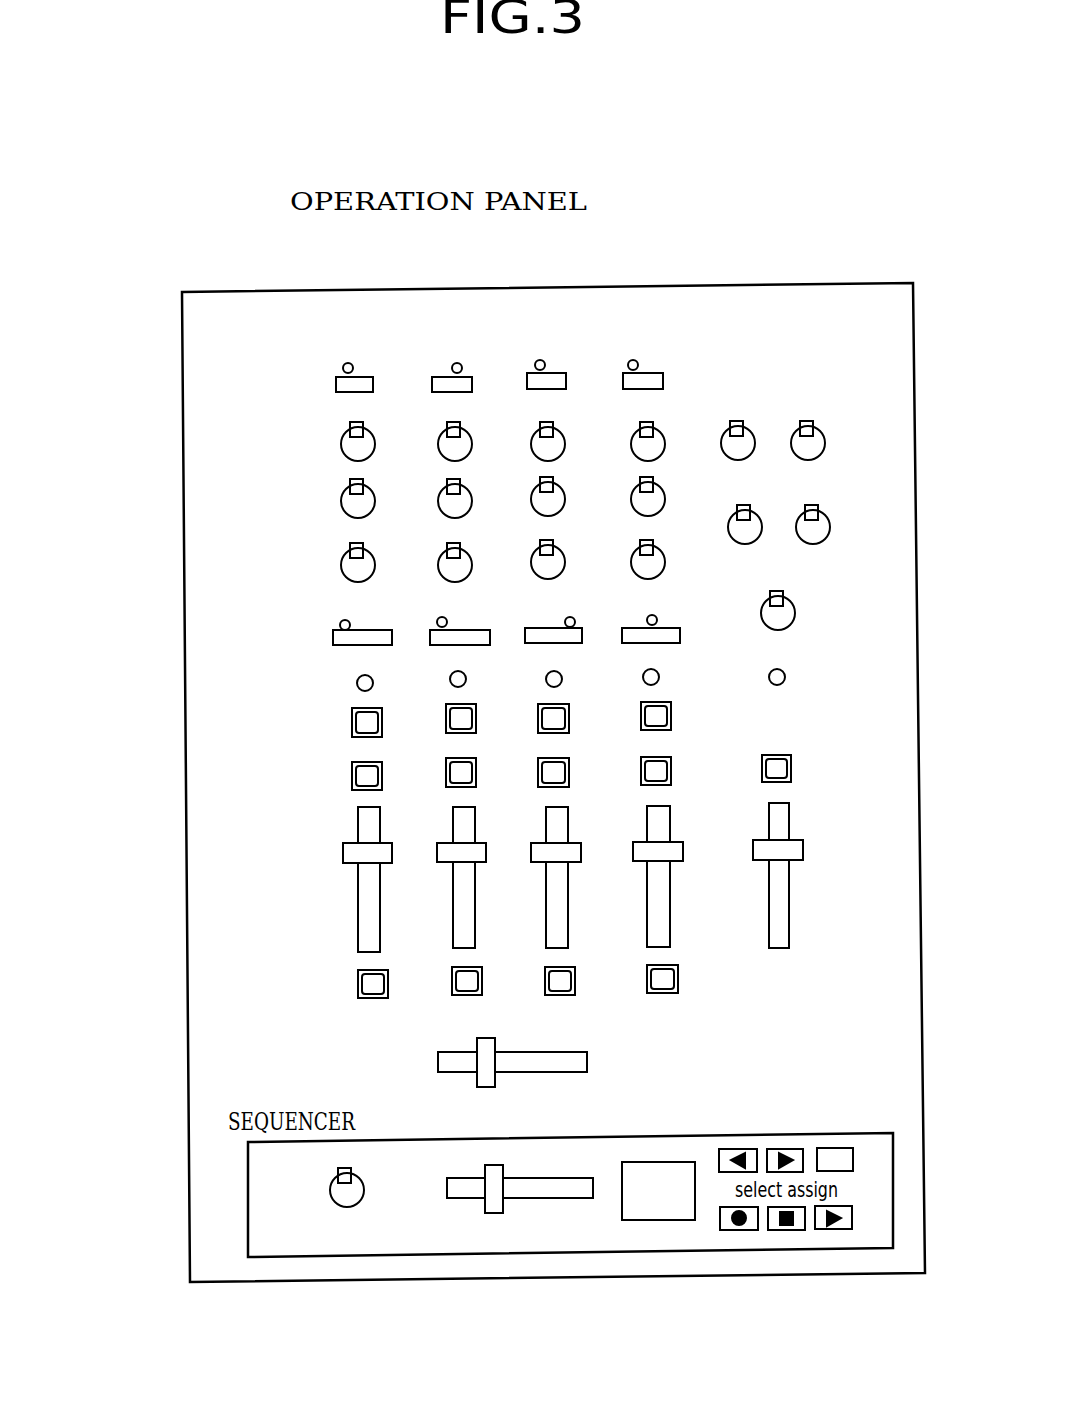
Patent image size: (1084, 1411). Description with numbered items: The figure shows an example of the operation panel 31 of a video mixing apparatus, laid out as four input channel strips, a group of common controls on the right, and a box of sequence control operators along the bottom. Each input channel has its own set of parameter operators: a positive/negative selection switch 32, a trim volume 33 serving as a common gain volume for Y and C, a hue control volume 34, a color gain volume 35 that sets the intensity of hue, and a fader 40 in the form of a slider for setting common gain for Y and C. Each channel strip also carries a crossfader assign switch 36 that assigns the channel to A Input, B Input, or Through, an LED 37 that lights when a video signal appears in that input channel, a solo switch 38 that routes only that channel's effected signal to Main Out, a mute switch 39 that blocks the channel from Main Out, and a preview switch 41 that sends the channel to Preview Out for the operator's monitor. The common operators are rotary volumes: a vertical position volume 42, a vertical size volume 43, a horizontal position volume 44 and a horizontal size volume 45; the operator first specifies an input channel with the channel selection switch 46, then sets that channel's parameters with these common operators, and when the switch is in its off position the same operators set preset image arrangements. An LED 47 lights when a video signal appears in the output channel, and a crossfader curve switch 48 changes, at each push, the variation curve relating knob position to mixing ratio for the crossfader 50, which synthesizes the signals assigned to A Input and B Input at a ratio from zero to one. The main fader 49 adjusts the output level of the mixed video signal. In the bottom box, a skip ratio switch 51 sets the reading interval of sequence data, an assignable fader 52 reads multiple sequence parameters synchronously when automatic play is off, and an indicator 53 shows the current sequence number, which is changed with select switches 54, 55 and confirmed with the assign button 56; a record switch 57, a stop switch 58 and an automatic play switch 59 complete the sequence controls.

The operation panel 31 is at (258, 290).
The positive/negative selection switch 32 is at (181, 388).
The trim volume 33 is at (245, 447).
The hue control volume 34 is at (250, 505).
The color gain volume 35 is at (243, 572).
The crossfader assign switch 36 is at (183, 642).
The LED 37 is at (235, 683).
The solo switch 38 is at (262, 725).
The mute switch 39 is at (250, 780).
The fader 40 is at (250, 850).
The preview switch 41 is at (215, 988).
The vertical position volume 42 is at (723, 438).
The vertical size volume 43 is at (826, 443).
The horizontal position volume 44 is at (730, 540).
The horizontal size volume 45 is at (831, 527).
The channel selection switch 46 is at (796, 613).
The LED 47 is at (785, 677).
The crossfader curve switch 48 is at (792, 768).
The main fader 49 is at (804, 848).
The crossfader 50 is at (455, 1072).
The skip ratio switch 51 is at (329, 1190).
The assignable fader 52 is at (447, 1185).
The indicator 53 is at (660, 1160).
The select switch 54 is at (743, 1148).
The select switch 55 is at (792, 1148).
The assign button 56 is at (838, 1147).
The record switch 57 is at (740, 1232).
The stop switch 58 is at (790, 1232).
The automatic play switch 59 is at (832, 1232).